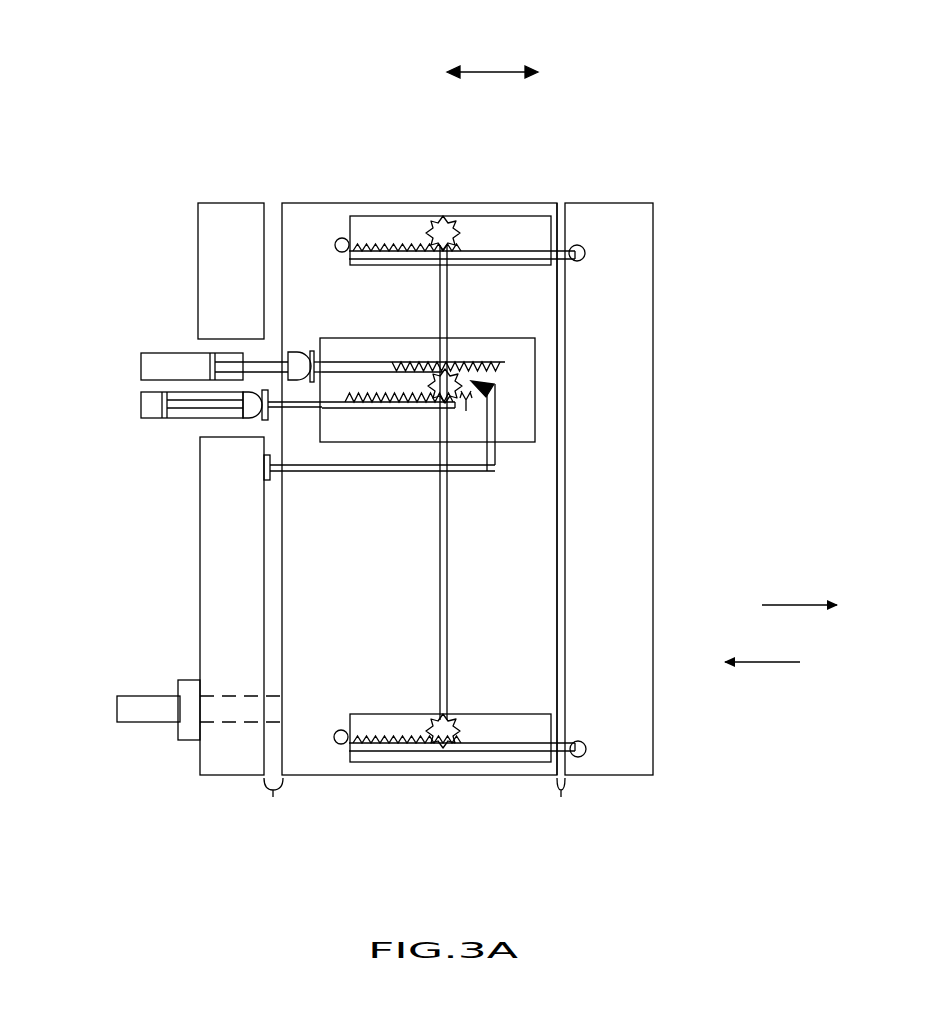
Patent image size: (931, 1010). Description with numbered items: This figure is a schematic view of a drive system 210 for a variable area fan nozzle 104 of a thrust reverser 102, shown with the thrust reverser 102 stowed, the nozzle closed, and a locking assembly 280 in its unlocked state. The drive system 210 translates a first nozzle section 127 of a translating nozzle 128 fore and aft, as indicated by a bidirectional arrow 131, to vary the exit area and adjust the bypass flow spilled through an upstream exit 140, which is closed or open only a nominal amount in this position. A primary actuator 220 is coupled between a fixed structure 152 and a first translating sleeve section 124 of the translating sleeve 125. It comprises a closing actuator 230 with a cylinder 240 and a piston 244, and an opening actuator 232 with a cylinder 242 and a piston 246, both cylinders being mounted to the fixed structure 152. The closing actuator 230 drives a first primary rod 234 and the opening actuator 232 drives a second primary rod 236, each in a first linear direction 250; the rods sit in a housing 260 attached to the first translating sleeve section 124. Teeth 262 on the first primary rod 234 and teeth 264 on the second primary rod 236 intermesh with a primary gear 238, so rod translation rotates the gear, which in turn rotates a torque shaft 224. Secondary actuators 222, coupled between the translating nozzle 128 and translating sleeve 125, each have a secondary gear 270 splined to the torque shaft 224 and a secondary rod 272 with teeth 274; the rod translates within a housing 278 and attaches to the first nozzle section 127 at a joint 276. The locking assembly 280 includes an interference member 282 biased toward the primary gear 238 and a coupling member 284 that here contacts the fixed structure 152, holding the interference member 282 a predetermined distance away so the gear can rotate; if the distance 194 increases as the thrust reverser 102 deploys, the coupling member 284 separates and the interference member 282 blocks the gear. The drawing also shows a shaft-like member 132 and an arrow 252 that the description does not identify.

The thrust reverser 102 is at (409, 433).
The variable area fan nozzle 104 is at (643, 438).
The first translating sleeve section 124 is at (419, 489).
The translating sleeve 125 is at (547, 527).
The first nozzle section 127 is at (609, 489).
The translating nozzle 128 is at (643, 483).
The bidirectional arrow 131 is at (497, 70).
The drive shaft 132 is at (142, 732).
The upstream exit 140 is at (561, 805).
The fixed structure 152 is at (232, 606).
The distance 194 is at (273, 805).
The drive system 210 is at (434, 447).
The primary actuator 220 is at (191, 341).
The secondary actuator 222 is at (358, 200).
The torque shaft 224 is at (440, 575).
The closing actuator 230 is at (192, 333).
The opening actuator 232 is at (191, 435).
The first primary rod 234 is at (470, 338).
The second primary rod 236 is at (303, 410).
The primary gear 238 is at (460, 372).
The cylinder 240 is at (153, 362).
The cylinder 242 is at (143, 403).
The piston 244 is at (257, 362).
The piston 246 is at (207, 406).
The first linear direction 250 is at (778, 607).
The second direction 252 is at (780, 664).
The housing 260 is at (388, 443).
The teeth 262 is at (497, 371).
The teeth 264 is at (360, 368).
The secondary gear 270 is at (440, 218).
The secondary rod 272 is at (513, 251).
The teeth 274 is at (400, 250).
The joint 276 is at (583, 256).
The housing 278 is at (488, 263).
The locking assembly 280 is at (468, 430).
The interference member 282 is at (480, 386).
The coupling member 284 is at (497, 468).